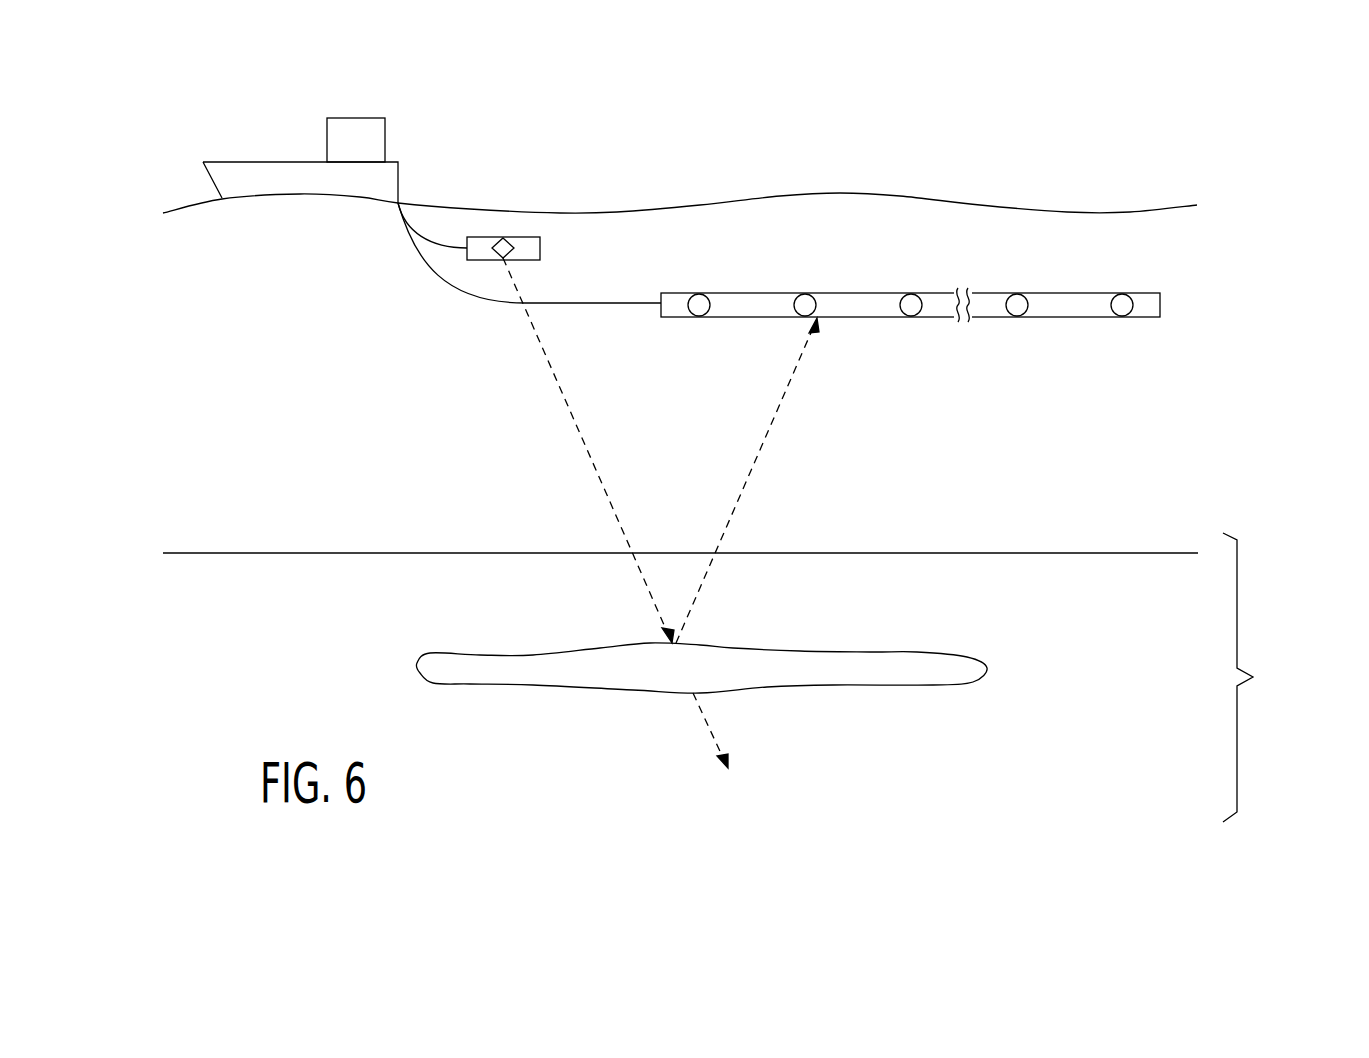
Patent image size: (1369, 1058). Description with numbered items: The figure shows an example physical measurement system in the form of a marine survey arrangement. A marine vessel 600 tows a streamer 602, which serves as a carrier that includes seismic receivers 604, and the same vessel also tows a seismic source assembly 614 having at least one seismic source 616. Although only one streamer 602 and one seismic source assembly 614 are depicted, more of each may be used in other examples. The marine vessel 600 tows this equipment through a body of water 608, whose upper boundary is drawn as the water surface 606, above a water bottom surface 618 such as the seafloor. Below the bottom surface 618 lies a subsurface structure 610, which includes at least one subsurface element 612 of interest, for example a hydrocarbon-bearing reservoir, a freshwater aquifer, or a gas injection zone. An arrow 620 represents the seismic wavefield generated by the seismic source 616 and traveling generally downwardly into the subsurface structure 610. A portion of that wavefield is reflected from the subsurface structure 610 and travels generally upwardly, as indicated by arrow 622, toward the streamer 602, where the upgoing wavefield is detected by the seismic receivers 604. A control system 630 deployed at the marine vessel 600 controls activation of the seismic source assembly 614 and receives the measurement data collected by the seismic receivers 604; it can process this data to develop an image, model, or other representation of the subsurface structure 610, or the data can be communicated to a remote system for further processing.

The marine vessel 600 is at (300, 162).
The control system 630 is at (386, 143).
The water surface 606 is at (1075, 212).
The seismic source assembly 614 is at (540, 245).
The seismic source 616 is at (495, 238).
The streamer 602 is at (1160, 303).
The seismic receivers 604 is at (805, 303).
The body of water 608 is at (317, 411).
The water bottom surface 618 is at (950, 552).
The subsurface structure 610 is at (1260, 677).
The subsurface element 612 is at (905, 655).
The arrow 620 is at (585, 447).
The arrow 622 is at (745, 483).